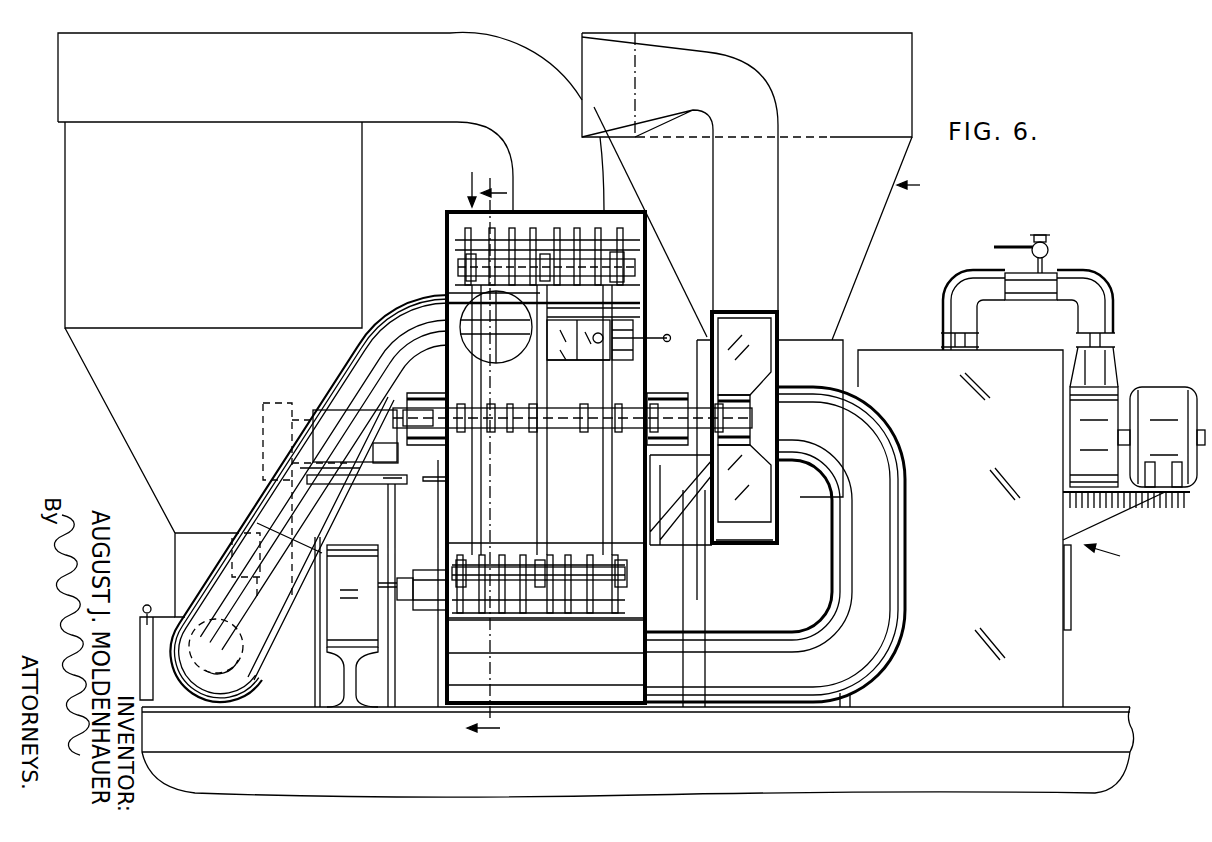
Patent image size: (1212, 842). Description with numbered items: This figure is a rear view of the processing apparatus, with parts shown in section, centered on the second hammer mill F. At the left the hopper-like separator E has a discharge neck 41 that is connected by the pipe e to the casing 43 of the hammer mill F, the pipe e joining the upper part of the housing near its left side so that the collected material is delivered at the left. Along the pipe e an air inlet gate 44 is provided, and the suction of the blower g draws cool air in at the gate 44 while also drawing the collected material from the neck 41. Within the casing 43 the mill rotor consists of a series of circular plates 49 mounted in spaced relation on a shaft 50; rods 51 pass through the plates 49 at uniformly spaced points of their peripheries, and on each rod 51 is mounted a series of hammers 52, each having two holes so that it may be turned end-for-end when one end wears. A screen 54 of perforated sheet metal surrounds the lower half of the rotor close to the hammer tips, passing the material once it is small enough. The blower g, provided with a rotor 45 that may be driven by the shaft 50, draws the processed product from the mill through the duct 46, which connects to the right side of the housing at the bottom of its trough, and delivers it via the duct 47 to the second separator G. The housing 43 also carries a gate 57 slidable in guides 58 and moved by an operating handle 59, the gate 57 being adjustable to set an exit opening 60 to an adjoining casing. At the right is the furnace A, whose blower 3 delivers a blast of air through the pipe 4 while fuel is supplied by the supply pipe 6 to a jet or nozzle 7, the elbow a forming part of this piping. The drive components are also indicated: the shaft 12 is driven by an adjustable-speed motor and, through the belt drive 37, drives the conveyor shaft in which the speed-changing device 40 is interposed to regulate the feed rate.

The blower 3 is at (1119, 396).
The pipe 4 is at (1030, 279).
The supply pipe 6 is at (1008, 247).
The jet or nozzle 7 is at (489, 454).
The shaft 12 is at (234, 533).
The belt drive 37 is at (265, 452).
The speed-changing device 40 is at (381, 456).
The discharge neck 41 is at (175, 578).
The casing 43 is at (452, 209).
The air inlet gate 44 is at (156, 636).
The rotor 45 is at (766, 333).
The duct 46 is at (907, 544).
The duct 47 is at (780, 211).
The circular plates 49 is at (604, 497).
The shaft 50 is at (663, 409).
The rods 51 is at (520, 256).
The hammers 52 is at (620, 227).
The screen 54 is at (530, 619).
The gate 57 is at (590, 352).
The guides 58 is at (547, 317).
The operating handle 59 is at (668, 337).
The exit opening 60 is at (633, 328).
The furnace A is at (1031, 527).
The separator E is at (364, 224).
The second hammer mill F is at (468, 178).
The second separator G is at (857, 317).
The pipe elbow a is at (950, 294).
The pipe e is at (334, 379).
The blower g is at (748, 537).